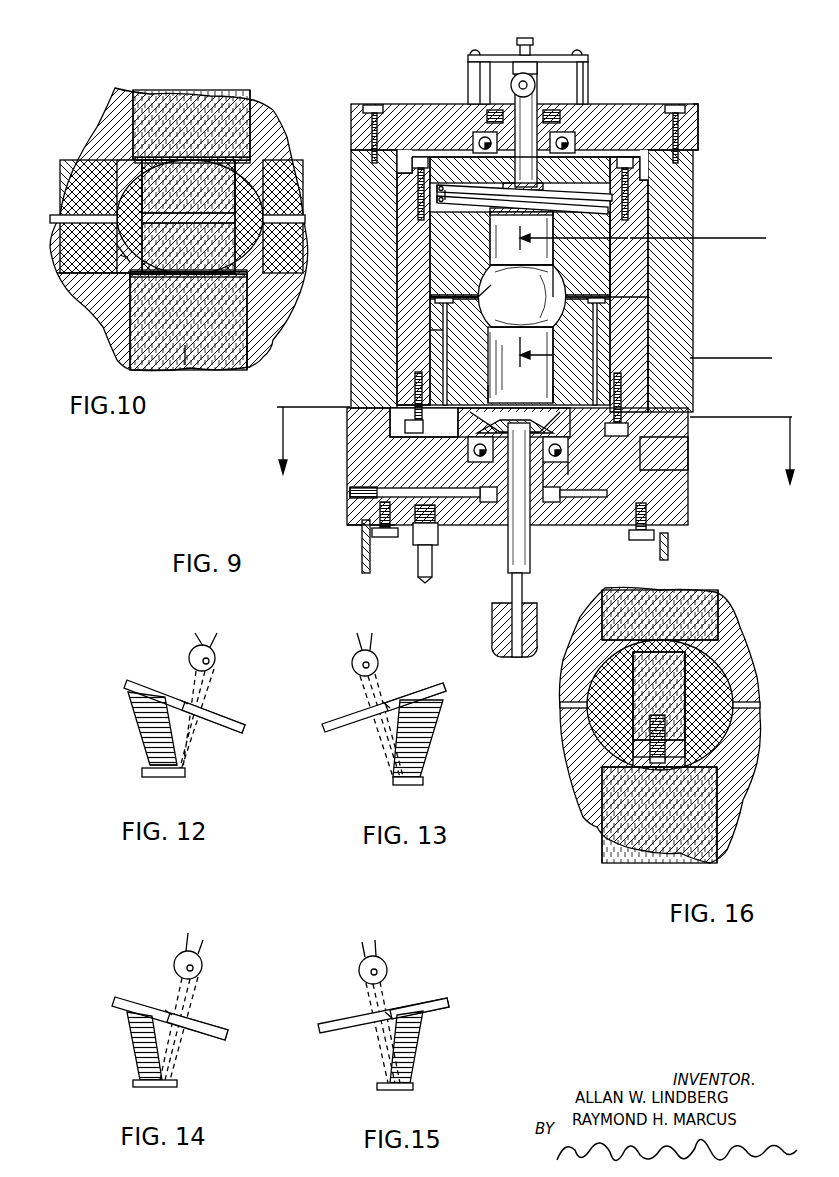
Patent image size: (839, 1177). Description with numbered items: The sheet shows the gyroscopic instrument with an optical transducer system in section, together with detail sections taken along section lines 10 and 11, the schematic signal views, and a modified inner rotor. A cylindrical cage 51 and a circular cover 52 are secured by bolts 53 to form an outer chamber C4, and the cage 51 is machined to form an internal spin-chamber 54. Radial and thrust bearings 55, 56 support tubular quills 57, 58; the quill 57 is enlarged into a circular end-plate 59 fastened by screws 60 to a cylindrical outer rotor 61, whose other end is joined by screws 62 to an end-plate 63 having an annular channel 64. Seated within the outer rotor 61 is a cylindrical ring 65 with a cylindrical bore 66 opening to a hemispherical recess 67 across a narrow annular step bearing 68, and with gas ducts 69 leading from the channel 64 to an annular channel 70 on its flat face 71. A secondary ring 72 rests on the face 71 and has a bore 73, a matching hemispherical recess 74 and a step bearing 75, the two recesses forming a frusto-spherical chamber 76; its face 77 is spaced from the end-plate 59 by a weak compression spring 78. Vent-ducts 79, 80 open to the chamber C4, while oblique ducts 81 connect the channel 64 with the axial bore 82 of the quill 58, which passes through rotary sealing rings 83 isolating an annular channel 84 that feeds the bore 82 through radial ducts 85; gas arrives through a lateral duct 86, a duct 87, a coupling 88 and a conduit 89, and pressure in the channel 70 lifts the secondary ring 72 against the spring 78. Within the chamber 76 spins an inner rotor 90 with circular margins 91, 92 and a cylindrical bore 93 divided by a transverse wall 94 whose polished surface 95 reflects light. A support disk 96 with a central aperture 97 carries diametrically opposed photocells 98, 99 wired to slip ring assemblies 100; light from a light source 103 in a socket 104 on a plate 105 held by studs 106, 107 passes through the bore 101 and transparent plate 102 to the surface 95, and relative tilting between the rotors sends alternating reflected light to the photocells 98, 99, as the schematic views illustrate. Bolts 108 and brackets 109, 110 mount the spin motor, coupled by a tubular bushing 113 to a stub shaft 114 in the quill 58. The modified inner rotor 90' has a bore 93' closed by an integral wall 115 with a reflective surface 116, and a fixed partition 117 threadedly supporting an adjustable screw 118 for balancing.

In FIG. 9, the section line 10— 10 is at (659, 299).
In FIG. 9, the section line 11— 11 is at (537, 459).
In FIG. 9, the cylindrical cage 51 is at (688, 522).
In FIG. 9, the circular plate or cover 52 is at (698, 137).
In FIG. 9, the bolts 53 is at (372, 106).
In FIG. 9, the internal spin-chamber 54 is at (643, 432).
In FIG. 9, the radial and thrust bearing 55 is at (600, 190).
In FIG. 9, the radial and thrust bearing 56 is at (690, 450).
In FIG. 9, the tubular pintle or quill 57 is at (628, 157).
In FIG. 9, the tubular pintle or quill 58 is at (505, 537).
In FIG. 9, the circular end-plate 59 is at (463, 183).
In FIG. 9, the screws 60 is at (414, 160).
In FIG. 9, the cylindrical outer rotor 61 is at (650, 343).
In FIG. 9, the screws 62 is at (413, 423).
In FIG. 9, the circular end-plate 63 is at (417, 438).
In FIG. 9, the annular channel 64 is at (400, 372).
In FIG. 9, the cylindrical ring 65 is at (607, 337).
In FIG. 10, the cylindrical ring 65 is at (258, 355).
In FIG. 9, the cylindrical bore 66 is at (547, 372).
In FIG. 10, the cylindrical bore 66 is at (190, 355).
In FIG. 9, the hemispherical recess 67 is at (485, 305).
In FIG. 10, the hemispherical recess 67 is at (128, 262).
In FIG. 9, the annular step bearing 68 is at (440, 330).
In FIG. 10, the annular step bearing 68 is at (130, 255).
In FIG. 9, the gas ducts 69 is at (640, 312).
In FIG. 9, the annular channel 70 is at (440, 296).
In FIG. 9, the flat face 71 is at (692, 295).
In FIG. 10, the flat face 71 is at (60, 272).
In FIG. 9, the secondary ring 72 is at (600, 257).
In FIG. 10, the secondary ring 72 is at (110, 107).
In FIG. 9, the cylindrical bore 73 is at (430, 233).
In FIG. 10, the cylindrical bore 73 is at (190, 112).
In FIG. 9, the hemispherical recess 74 is at (473, 280).
In FIG. 10, the hemispherical recess 74 is at (120, 190).
In FIG. 9, the annular step bearing 75 is at (498, 273).
In FIG. 10, the annular step bearing 75 is at (128, 185).
In FIG. 9, the frusto-spherical recess or chamber 76 is at (478, 303).
In FIG. 10, the frusto-spherical recess or chamber 76 is at (90, 215).
In FIG. 9, the face 77 is at (352, 142).
In FIG. 9, the compression spring 78 is at (648, 165).
In FIG. 9, the vent-ducts 79 is at (472, 157).
In FIG. 9, the vent-ducts 80 is at (477, 433).
In FIG. 9, the oblique gas-transmission ducts 81 is at (490, 393).
In FIG. 9, the axial bore 82 is at (570, 453).
In FIG. 9, the rotary sealing rings 83 is at (548, 505).
In FIG. 9, the annular channel 84 is at (560, 493).
In FIG. 9, the radial ducts 85 is at (483, 502).
In FIG. 9, the lateral duct 86 is at (387, 490).
In FIG. 9, the duct 87 is at (407, 533).
In FIG. 9, the coupling 88 is at (416, 535).
In FIG. 9, the conduit 89 is at (428, 578).
In FIG. 9, the inner rotor 90 is at (671, 254).
In FIG. 10, the inner rotor 90 is at (221, 200).
In FIG. 16, the modified inner rotor 90' is at (678, 725).
In FIG. 10, the upper circular margin 91 is at (195, 165).
In FIG. 10, the lower circular margin 92 is at (212, 278).
In FIG. 10, the cylindrical bore 93 is at (251, 141).
In FIG. 16, the central cylindrical bore 93' is at (707, 667).
In FIG. 10, the transverse wall 94 is at (182, 224).
In FIG. 12, the transverse wall 94 is at (180, 778).
In FIG. 13, the transverse wall 94 is at (400, 785).
In FIG. 14, the transverse wall 94 is at (178, 1086).
In FIG. 15, the transverse wall 94 is at (412, 1088).
In FIG. 10, the reflective surface 95 is at (178, 215).
In FIG. 12, the reflective surface 95 is at (182, 768).
In FIG. 13, the reflective surface 95 is at (425, 775).
In FIG. 14, the reflective surface 95 is at (135, 1080).
In FIG. 15, the reflective surface 95 is at (410, 1080).
In FIG. 9, the support disk 96 is at (615, 195).
In FIG. 12, the support disk 96 is at (237, 726).
In FIG. 13, the support disk 96 is at (342, 728).
In FIG. 14, the support disk 96 is at (203, 1020).
In FIG. 15, the support disk 96 is at (440, 1000).
In FIG. 9, the central aperture 97 is at (620, 217).
In FIG. 12, the central aperture 97 is at (197, 705).
In FIG. 13, the central aperture 97 is at (385, 705).
In FIG. 14, the central aperture 97 is at (165, 1010).
In FIG. 15, the central aperture 97 is at (370, 1015).
In FIG. 9, the photocell 98 is at (437, 205).
In FIG. 12, the photocell 98 is at (127, 700).
In FIG. 13, the photocell 98 is at (347, 738).
In FIG. 14, the photocell 98 is at (118, 1010).
In FIG. 15, the photocell 98 is at (332, 1040).
In FIG. 9, the photocell 99 is at (617, 203).
In FIG. 12, the photocell 99 is at (243, 738).
In FIG. 13, the photocell 99 is at (440, 700).
In FIG. 14, the photocell 99 is at (226, 1040).
In FIG. 15, the photocell 99 is at (447, 1005).
In FIG. 9, the slip ring assemblies 100 is at (493, 104).
In FIG. 9, the bore 101 is at (536, 84).
In FIG. 9, the transparent plate 102 is at (563, 143).
In FIG. 9, the light source 103 is at (528, 183).
In FIG. 12, the light source 103 is at (216, 662).
In FIG. 13, the light source 103 is at (353, 655).
In FIG. 14, the light source 103 is at (203, 967).
In FIG. 15, the light source 103 is at (358, 965).
In FIG. 9, the socket 104 is at (530, 40).
In FIG. 9, the plate 105 is at (583, 50).
In FIG. 9, the stud 106 is at (470, 62).
In FIG. 9, the stud 107 is at (572, 132).
In FIG. 9, the bolts 108 is at (377, 530).
In FIG. 9, the bracket 109 is at (362, 573).
In FIG. 9, the bracket 110 is at (668, 552).
In FIG. 9, the tubular bushing 113 is at (492, 630).
In FIG. 9, the stub shaft 114 is at (524, 595).
In FIG. 16, the integral wall 115 is at (685, 640).
In FIG. 16, the reflective surface 116 is at (665, 640).
In FIG. 16, the fixed partition or wall 117 is at (630, 760).
In FIG. 16, the adjustable screw 118 is at (658, 765).
In FIG. 9, the outer chamber C4 is at (697, 147).